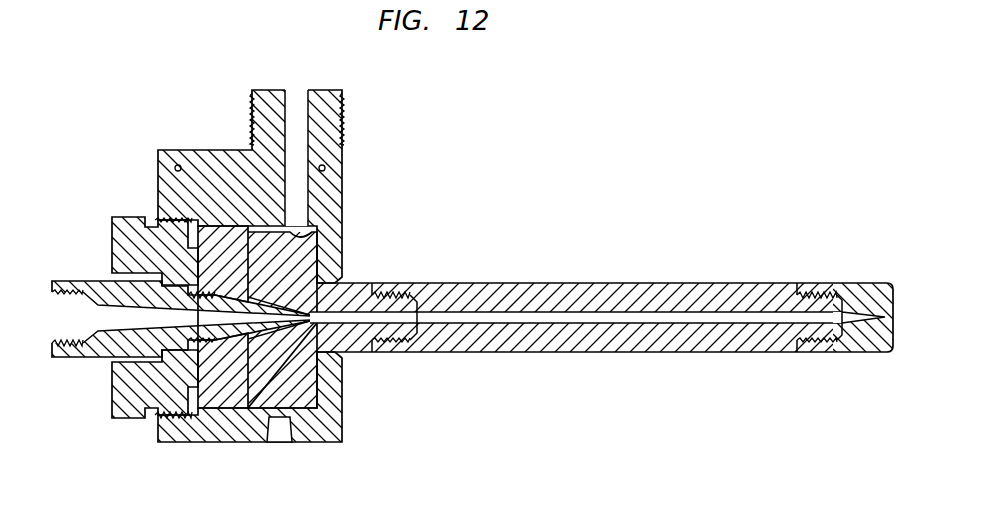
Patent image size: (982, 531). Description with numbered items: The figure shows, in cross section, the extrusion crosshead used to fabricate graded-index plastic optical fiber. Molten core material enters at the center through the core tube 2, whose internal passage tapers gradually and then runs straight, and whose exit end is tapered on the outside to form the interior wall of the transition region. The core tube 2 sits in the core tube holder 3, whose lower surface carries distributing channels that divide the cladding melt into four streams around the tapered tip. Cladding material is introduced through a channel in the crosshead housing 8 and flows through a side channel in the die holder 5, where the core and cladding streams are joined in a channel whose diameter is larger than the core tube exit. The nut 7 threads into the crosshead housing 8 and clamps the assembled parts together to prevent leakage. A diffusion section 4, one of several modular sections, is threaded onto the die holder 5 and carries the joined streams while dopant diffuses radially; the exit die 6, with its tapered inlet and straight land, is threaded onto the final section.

The core tube 2 is at (90, 281).
The core tube holder 3 is at (227, 408).
The diffusion section 4 is at (590, 355).
The die holder 5 is at (357, 357).
The exit die 6 is at (833, 355).
The nut 7 is at (128, 218).
The crosshead housing 8 is at (197, 150).